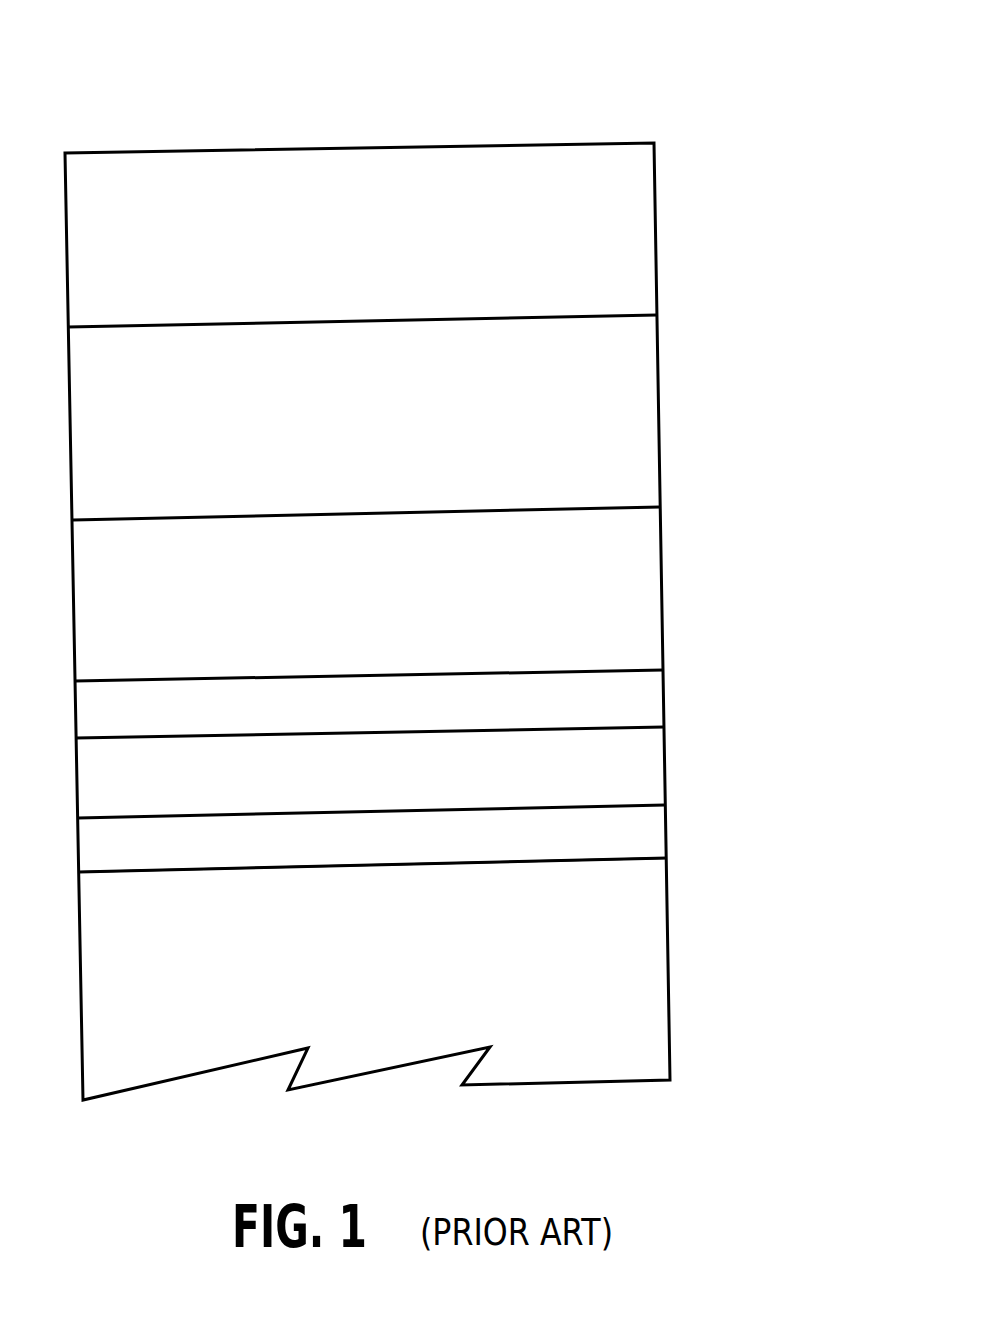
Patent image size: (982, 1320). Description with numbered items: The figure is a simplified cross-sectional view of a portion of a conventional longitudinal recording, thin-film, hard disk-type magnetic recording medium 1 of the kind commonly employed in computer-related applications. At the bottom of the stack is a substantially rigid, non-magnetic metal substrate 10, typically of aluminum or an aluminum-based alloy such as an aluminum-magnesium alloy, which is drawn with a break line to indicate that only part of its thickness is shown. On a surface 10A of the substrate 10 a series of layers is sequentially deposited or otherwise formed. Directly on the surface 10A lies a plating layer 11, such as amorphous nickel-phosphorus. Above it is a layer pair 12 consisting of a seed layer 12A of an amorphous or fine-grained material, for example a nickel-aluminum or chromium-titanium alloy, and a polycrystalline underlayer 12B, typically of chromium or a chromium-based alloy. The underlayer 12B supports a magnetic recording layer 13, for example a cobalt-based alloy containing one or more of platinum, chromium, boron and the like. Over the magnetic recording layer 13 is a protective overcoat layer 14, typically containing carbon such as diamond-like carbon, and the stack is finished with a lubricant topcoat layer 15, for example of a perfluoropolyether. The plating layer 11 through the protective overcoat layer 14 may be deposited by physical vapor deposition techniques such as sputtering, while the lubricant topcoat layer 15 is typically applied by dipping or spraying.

The magnetic recording medium 1 is at (528, 95).
The substrate 10 is at (672, 980).
The surface 10A is at (632, 859).
The plating layer 11 is at (667, 832).
The seed layer and underlayer 12 is at (808, 663).
The seed layer 12A is at (665, 753).
The polycrystalline underlayer 12B is at (665, 693).
The magnetic recording layer 13 is at (663, 578).
The protective overcoat layer 14 is at (660, 398).
The lubricant topcoat layer 15 is at (657, 218).